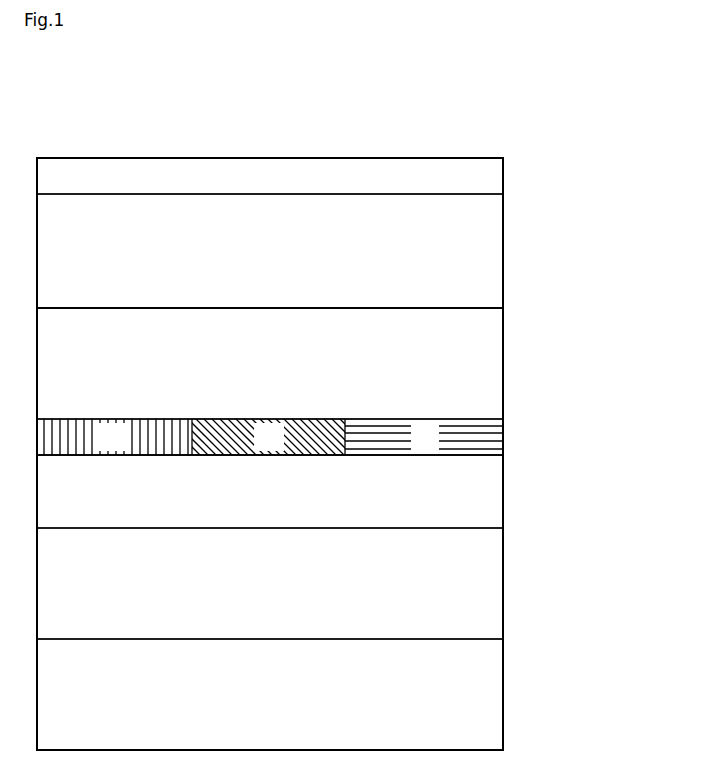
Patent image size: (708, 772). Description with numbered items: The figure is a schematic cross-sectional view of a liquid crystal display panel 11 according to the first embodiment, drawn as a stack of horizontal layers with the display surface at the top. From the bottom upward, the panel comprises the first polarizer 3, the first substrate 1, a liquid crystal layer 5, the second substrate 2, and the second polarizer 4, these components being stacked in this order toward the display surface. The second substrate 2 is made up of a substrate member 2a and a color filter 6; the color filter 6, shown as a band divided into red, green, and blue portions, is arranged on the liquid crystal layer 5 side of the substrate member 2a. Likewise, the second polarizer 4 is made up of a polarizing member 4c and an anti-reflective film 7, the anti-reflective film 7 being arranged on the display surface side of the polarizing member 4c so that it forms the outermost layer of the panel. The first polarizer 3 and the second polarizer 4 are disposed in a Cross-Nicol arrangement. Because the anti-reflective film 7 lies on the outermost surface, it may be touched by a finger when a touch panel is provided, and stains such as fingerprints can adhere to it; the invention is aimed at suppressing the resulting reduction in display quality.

The liquid crystal display panel 11 is at (293, 148).
The anti-reflective film 7 is at (488, 179).
The polarizing member 4c is at (488, 267).
The second polarizer 4 is at (625, 167).
The substrate member 2a is at (488, 355).
The second substrate 2 is at (625, 340).
The color filter 6 is at (490, 430).
The liquid crystal layer 5 is at (488, 497).
The first substrate 1 is at (488, 597).
The first polarizer 3 is at (488, 692).